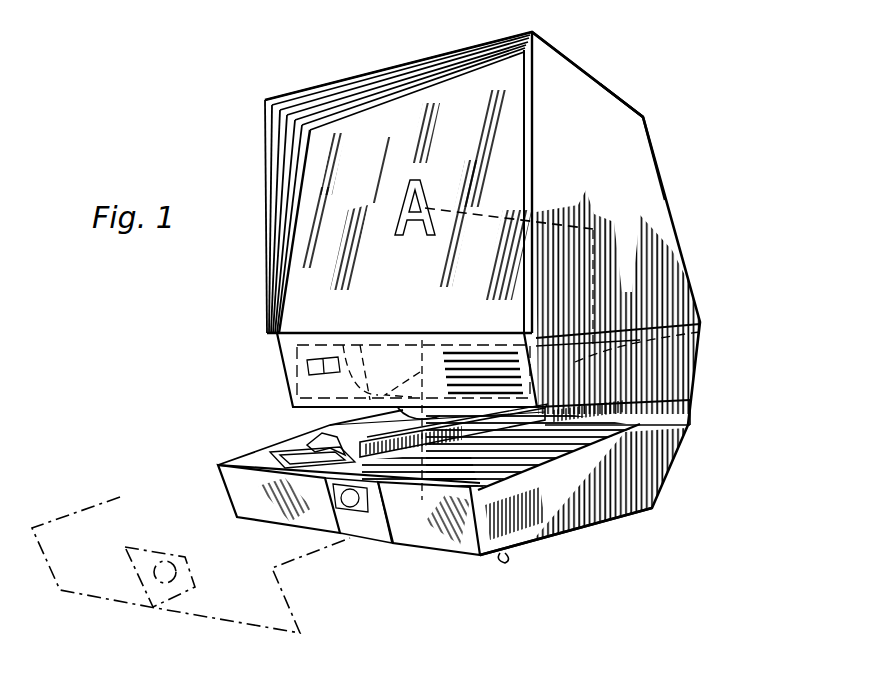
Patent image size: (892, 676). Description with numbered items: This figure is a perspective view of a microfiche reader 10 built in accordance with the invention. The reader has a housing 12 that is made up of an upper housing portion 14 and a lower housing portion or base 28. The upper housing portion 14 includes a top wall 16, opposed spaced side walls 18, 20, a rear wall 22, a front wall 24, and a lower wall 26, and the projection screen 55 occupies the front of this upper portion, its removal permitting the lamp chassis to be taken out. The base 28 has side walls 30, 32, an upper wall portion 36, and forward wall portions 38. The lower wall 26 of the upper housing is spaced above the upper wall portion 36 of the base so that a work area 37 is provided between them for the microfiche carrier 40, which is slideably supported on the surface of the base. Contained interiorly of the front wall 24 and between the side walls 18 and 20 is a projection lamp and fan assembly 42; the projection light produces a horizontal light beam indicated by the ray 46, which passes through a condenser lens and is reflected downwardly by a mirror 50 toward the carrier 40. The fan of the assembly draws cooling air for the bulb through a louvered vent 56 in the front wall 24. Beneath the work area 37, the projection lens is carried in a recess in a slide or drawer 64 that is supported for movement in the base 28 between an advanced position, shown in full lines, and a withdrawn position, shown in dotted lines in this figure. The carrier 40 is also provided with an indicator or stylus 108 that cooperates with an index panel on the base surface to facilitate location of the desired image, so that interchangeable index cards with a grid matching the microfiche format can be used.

The microfiche reader 10 is at (482, 293).
The housing 12 is at (680, 227).
The upper housing portion 14 is at (605, 200).
The top wall 16 is at (570, 58).
The side wall 18 is at (285, 138).
The side wall 20 is at (615, 115).
The rear wall 22 is at (660, 147).
The front wall 24 is at (305, 367).
The lower wall 26 is at (615, 398).
The lower housing portion or base 28 is at (630, 462).
The side wall 30 is at (650, 500).
The side wall 32 is at (228, 478).
The upper wall portion 36 is at (480, 548).
The work area 37 is at (615, 430).
The forward wall portions 38 is at (270, 492).
The microfiche carrier 40 is at (312, 437).
The projection lamp and fan assembly 42 is at (690, 338).
The ray 46 is at (425, 340).
The mirror 50 is at (372, 336).
The projection screen 55 is at (392, 135).
The louvered vent 56 is at (475, 352).
The slide or drawer 64 is at (375, 528).
The indicator or stylus 108 is at (275, 452).